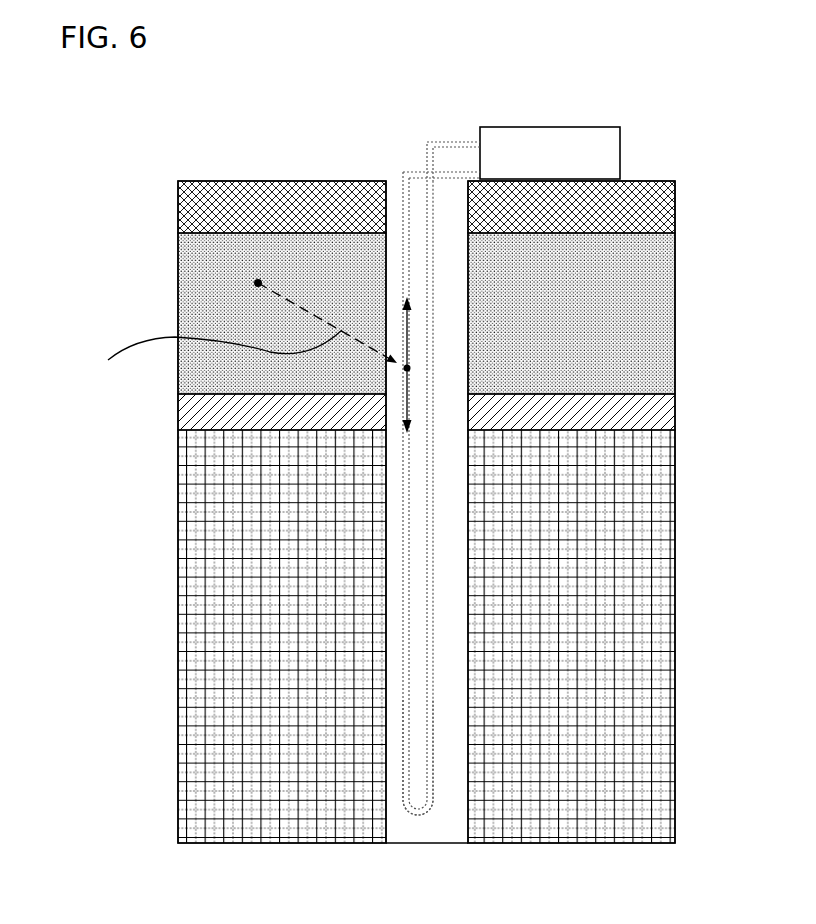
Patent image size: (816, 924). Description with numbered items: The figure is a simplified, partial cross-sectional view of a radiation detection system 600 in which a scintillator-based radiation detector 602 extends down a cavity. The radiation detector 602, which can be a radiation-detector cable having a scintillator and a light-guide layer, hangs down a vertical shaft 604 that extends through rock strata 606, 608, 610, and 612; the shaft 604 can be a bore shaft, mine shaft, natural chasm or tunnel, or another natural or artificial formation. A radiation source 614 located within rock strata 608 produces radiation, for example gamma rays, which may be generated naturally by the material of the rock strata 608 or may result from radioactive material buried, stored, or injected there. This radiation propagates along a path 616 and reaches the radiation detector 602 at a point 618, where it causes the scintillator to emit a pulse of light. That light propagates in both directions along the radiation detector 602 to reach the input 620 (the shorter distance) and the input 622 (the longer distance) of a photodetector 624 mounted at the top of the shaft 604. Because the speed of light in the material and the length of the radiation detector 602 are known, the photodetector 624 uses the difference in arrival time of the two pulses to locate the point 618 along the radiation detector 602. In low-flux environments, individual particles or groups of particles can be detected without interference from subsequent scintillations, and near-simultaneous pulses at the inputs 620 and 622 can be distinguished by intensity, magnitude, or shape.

The radiation detection system 600 is at (660, 88).
The radiation detector 602 is at (432, 777).
The shaft 604 is at (388, 181).
The rock strata 606 is at (154, 181).
The rock strata 608 is at (154, 235).
The rock strata 610 is at (154, 396).
The rock strata 612 is at (154, 432).
The radiation source 614 is at (258, 283).
The path 616 is at (209, 357).
The point 618 is at (407, 368).
The input 620 is at (480, 173).
The input 622 is at (480, 140).
The photodetector 624 is at (550, 153).